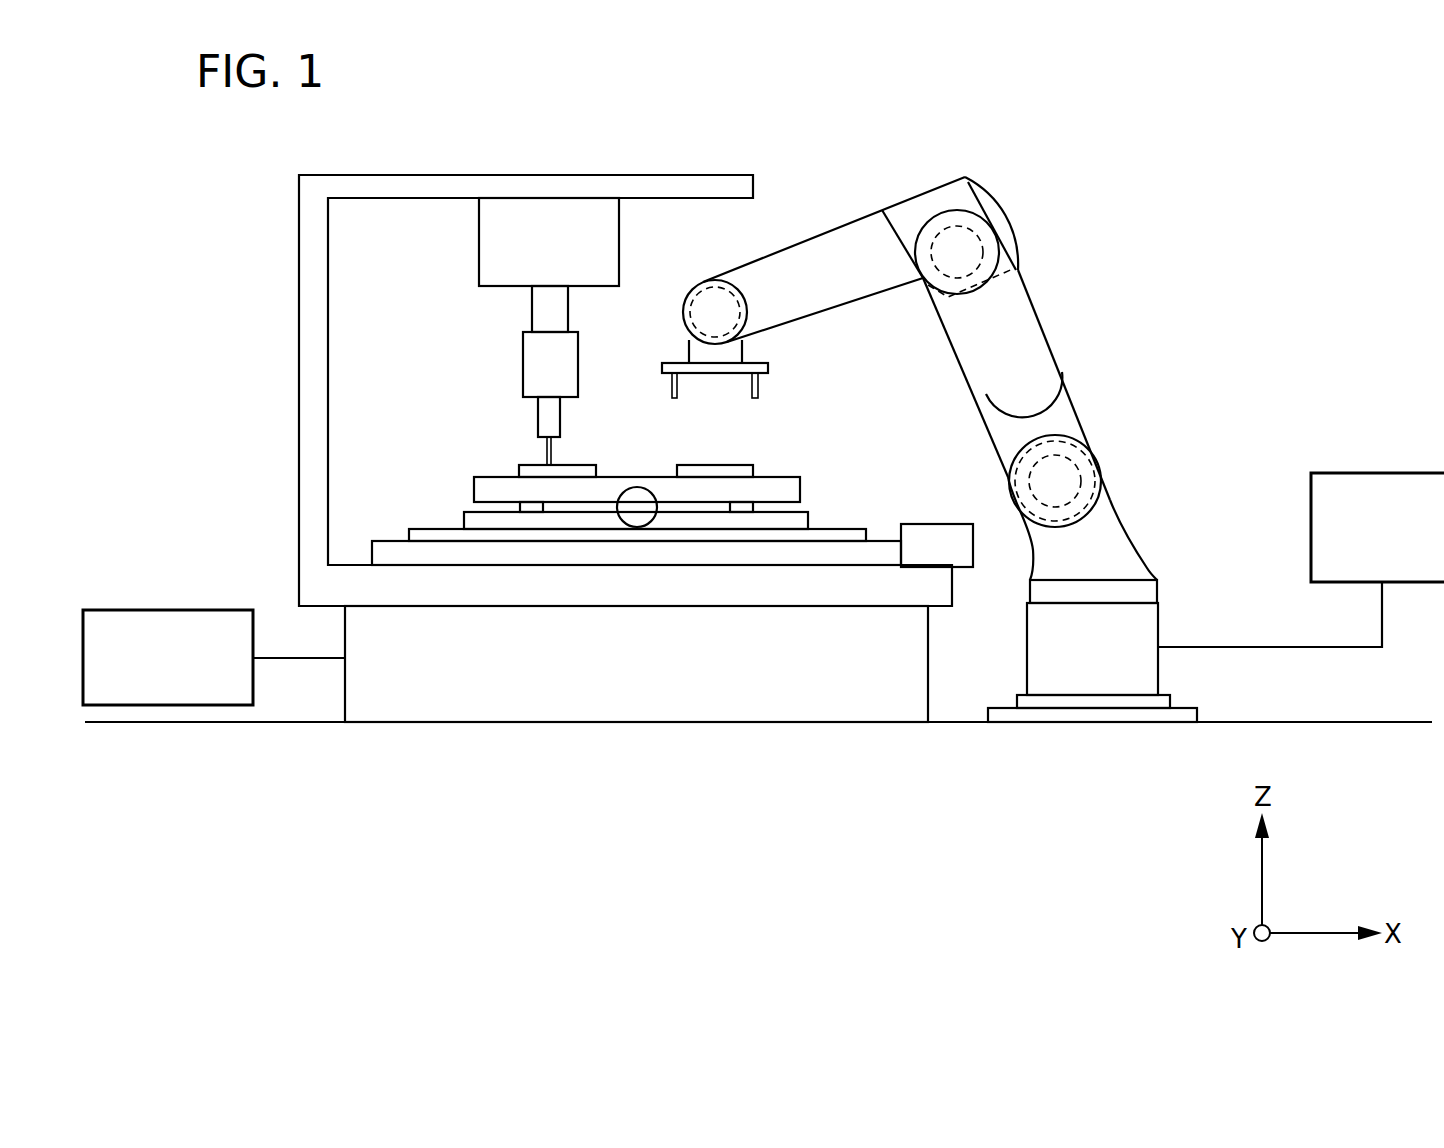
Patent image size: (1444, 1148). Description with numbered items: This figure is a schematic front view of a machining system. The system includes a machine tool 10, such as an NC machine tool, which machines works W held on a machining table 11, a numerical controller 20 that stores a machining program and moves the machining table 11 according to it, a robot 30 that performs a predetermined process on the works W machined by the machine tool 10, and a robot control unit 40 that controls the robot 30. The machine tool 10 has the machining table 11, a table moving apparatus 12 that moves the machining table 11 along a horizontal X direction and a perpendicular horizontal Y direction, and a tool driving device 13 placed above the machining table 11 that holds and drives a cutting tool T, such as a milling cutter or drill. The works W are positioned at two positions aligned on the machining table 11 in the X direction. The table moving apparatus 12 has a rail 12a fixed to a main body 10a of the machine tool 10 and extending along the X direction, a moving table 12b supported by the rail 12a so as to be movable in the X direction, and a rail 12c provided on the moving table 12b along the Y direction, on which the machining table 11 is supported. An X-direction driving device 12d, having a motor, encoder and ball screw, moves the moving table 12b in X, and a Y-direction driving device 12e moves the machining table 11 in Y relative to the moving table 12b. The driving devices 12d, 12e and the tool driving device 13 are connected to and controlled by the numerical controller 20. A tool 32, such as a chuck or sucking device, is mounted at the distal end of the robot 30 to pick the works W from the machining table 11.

The machine tool 10 is at (676, 175).
The main body 10a is at (372, 548).
The machining table 11 is at (802, 482).
The table moving apparatus 12 is at (585, 488).
The rail 12a is at (409, 529).
The moving table 12b is at (464, 521).
The rail 12c is at (520, 506).
The X-direction driving device 12d is at (938, 524).
The Y-direction driving device 12e is at (636, 487).
The tool driving device 13 is at (523, 348).
The cutting tool T is at (546, 446).
The work W is at (575, 465).
The numerical controller 20 is at (152, 610).
The robot 30 is at (1037, 312).
The tool 32 is at (768, 368).
The robot control unit 40 is at (1380, 473).